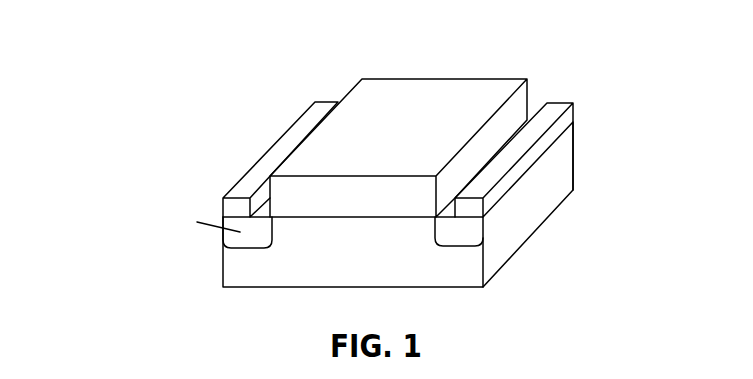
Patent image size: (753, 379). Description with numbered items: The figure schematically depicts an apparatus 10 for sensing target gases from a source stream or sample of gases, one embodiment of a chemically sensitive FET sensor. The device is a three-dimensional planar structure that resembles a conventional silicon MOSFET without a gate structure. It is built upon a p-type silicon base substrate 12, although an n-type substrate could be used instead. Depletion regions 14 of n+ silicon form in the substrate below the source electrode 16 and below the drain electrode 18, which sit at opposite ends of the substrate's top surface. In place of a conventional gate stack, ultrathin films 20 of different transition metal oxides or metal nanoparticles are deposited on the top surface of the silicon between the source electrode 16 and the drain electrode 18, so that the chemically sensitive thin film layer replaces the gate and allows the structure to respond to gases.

The apparatus 10 is at (138, 38).
The p-type silicon base substrate 12 is at (398, 278).
The depletion regions 14 is at (157, 207).
The source electrode 16 is at (293, 48).
The drain electrode 18 is at (585, 55).
The ultrathin films 20 is at (411, 87).